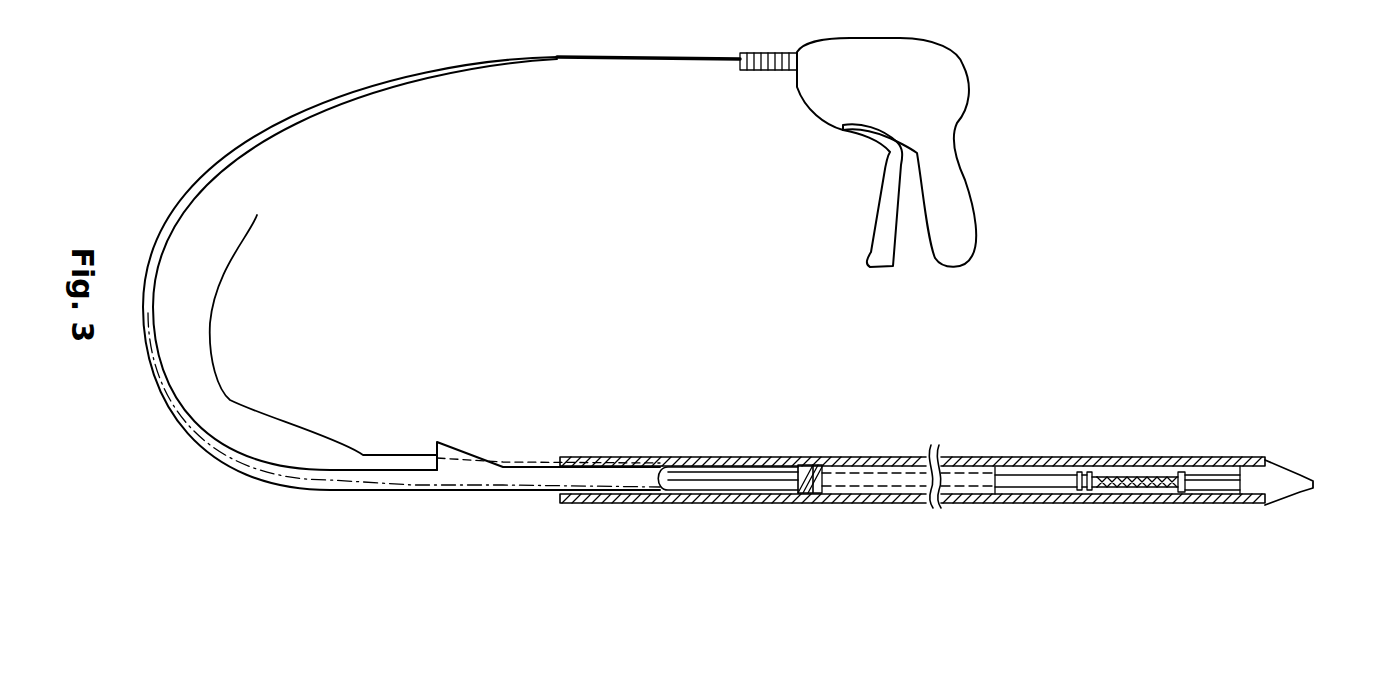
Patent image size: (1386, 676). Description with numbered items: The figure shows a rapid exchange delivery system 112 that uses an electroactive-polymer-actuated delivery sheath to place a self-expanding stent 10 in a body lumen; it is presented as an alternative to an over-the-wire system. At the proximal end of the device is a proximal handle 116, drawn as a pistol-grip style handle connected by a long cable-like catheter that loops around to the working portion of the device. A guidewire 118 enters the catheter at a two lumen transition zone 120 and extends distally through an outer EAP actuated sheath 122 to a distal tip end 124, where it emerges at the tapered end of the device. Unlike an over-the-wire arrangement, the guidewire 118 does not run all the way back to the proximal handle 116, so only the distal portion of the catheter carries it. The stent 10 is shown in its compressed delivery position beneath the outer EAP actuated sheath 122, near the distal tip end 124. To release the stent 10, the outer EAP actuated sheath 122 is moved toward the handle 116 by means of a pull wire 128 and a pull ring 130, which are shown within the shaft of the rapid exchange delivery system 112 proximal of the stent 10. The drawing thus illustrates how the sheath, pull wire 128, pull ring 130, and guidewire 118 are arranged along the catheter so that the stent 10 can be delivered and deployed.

The self-expanding stent 10 is at (1137, 470).
The rapid exchange delivery system 112 is at (633, 425).
The proximal handle 116 is at (957, 87).
The guidewire 118 is at (257, 215).
The two lumen transition zone 120 is at (503, 478).
The outer EAP actuated sheath 122 is at (970, 458).
The distal tip end 124 is at (1313, 457).
The pull wire 128 is at (750, 485).
The pull ring 130 is at (820, 463).